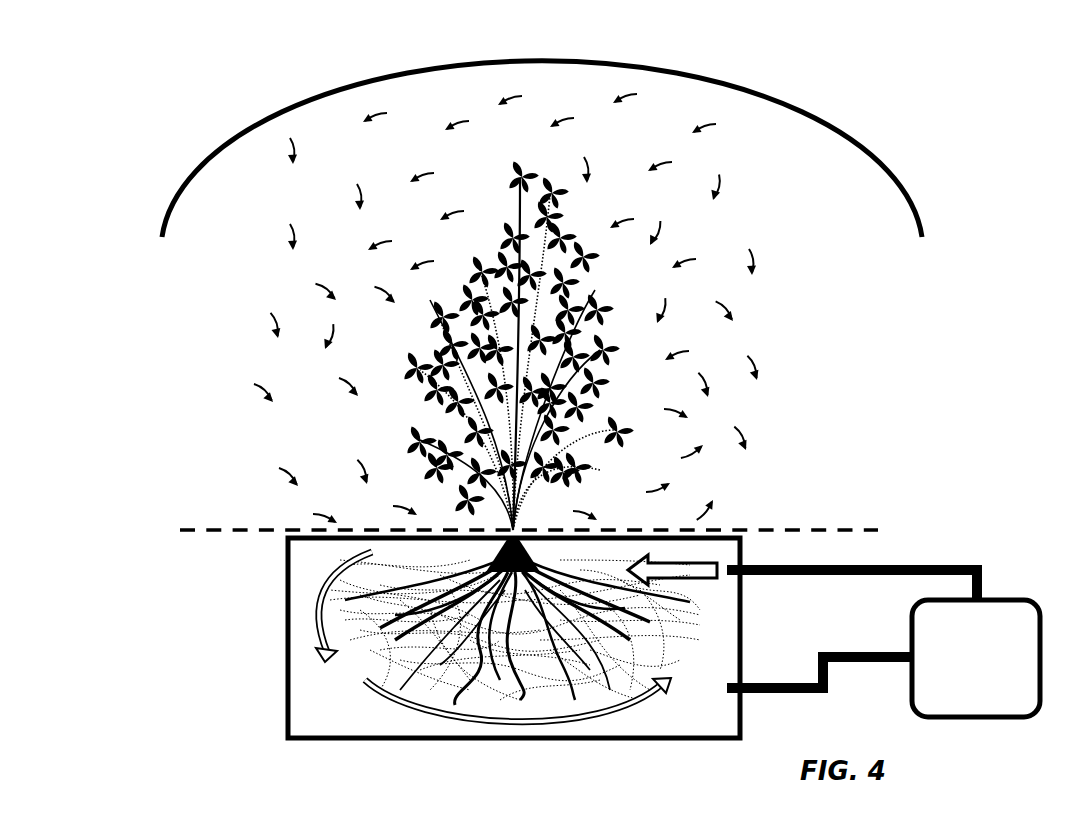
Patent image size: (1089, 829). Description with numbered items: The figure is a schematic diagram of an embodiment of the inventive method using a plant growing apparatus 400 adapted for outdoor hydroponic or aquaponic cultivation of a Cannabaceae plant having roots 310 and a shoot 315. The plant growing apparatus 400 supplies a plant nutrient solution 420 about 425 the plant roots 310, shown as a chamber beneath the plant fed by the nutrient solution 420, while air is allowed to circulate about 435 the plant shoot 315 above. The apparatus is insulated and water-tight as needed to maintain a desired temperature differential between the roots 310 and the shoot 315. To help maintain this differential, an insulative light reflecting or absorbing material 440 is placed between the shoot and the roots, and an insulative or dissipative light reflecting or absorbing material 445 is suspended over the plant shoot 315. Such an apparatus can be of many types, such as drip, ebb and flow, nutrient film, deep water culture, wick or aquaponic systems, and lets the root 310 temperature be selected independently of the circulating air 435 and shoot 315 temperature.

The plant growing apparatus 400 is at (186, 100).
The insulative or dissipative light reflecting or absorbing material 445 is at (913, 180).
The insulative light reflecting or absorbing material 440 is at (833, 517).
The circulating air 435 is at (722, 229).
The region about the plant roots 425 is at (722, 553).
The plant nutrient solution 420 is at (883, 643).
The shoot 315 is at (407, 407).
The roots 310 is at (370, 658).